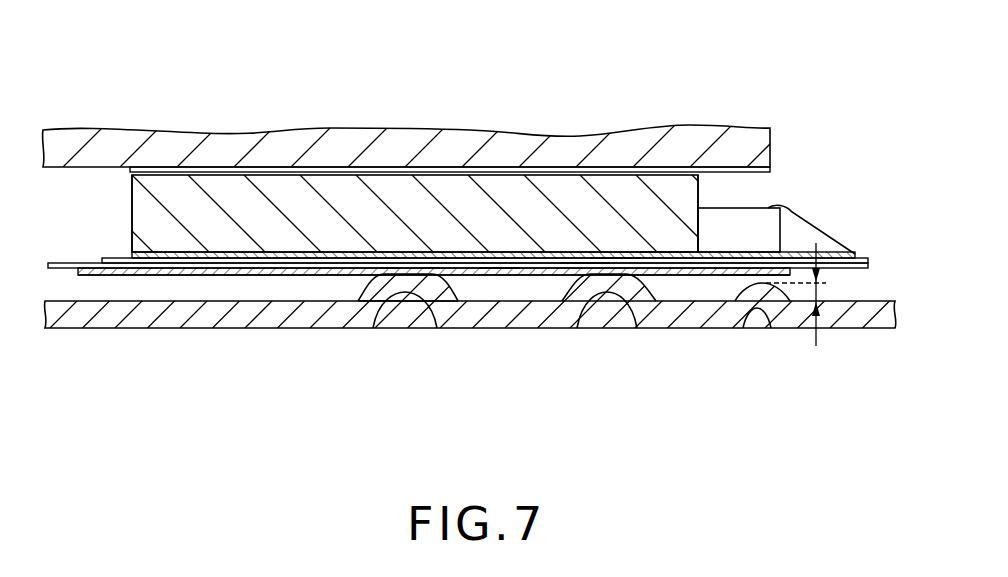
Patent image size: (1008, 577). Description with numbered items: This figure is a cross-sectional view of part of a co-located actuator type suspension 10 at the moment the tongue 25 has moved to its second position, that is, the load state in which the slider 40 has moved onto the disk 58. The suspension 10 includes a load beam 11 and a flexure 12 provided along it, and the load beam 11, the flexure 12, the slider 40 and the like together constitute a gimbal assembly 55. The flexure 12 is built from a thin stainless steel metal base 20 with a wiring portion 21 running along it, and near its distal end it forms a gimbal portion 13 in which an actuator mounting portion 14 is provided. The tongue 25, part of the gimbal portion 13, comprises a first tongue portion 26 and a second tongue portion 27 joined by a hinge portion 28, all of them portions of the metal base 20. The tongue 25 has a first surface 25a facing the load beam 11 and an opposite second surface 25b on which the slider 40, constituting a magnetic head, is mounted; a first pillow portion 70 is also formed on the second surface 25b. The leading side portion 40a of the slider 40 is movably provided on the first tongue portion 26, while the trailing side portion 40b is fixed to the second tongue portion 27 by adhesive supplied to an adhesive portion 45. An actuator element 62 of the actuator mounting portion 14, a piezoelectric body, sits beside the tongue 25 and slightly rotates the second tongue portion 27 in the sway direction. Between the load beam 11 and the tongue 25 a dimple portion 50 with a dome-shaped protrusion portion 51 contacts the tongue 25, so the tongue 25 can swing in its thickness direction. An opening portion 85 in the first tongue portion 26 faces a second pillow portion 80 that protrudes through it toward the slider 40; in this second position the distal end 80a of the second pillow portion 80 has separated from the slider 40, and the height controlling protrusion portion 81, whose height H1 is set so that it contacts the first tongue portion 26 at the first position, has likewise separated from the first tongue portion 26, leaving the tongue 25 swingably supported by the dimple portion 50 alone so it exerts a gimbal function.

The suspension 10 is at (836, 104).
The load beam 11 is at (318, 312).
The flexure 12 is at (110, 226).
The gimbal portion 13 is at (621, 384).
The actuator mounting portion 14 is at (764, 198).
The metal base 20 is at (165, 270).
The wiring portion 21 is at (105, 258).
The tongue 25 is at (279, 280).
The first surface 25a is at (476, 303).
The second surface 25b is at (498, 268).
The first tongue portion 26 is at (732, 292).
The second tongue portion 27 is at (213, 277).
The hinge portion 28 is at (390, 265).
The slider 40 is at (318, 188).
The leading side portion 40a is at (686, 200).
The trailing side portion 40b is at (163, 190).
The adhesive portion 45 is at (230, 253).
The dimple portion 50 is at (405, 312).
The protrusion portion 51 is at (430, 266).
The gimbal assembly 55 is at (101, 362).
The disk 58 is at (462, 140).
The actuator element 62 is at (745, 215).
The first pillow portion 70 is at (666, 253).
The second pillow portion 80 is at (608, 258).
The distal end 80a is at (590, 262).
The height controlling protrusion portion 81 is at (792, 275).
The opening portion 85 is at (540, 276).
The height H1 is at (822, 286).